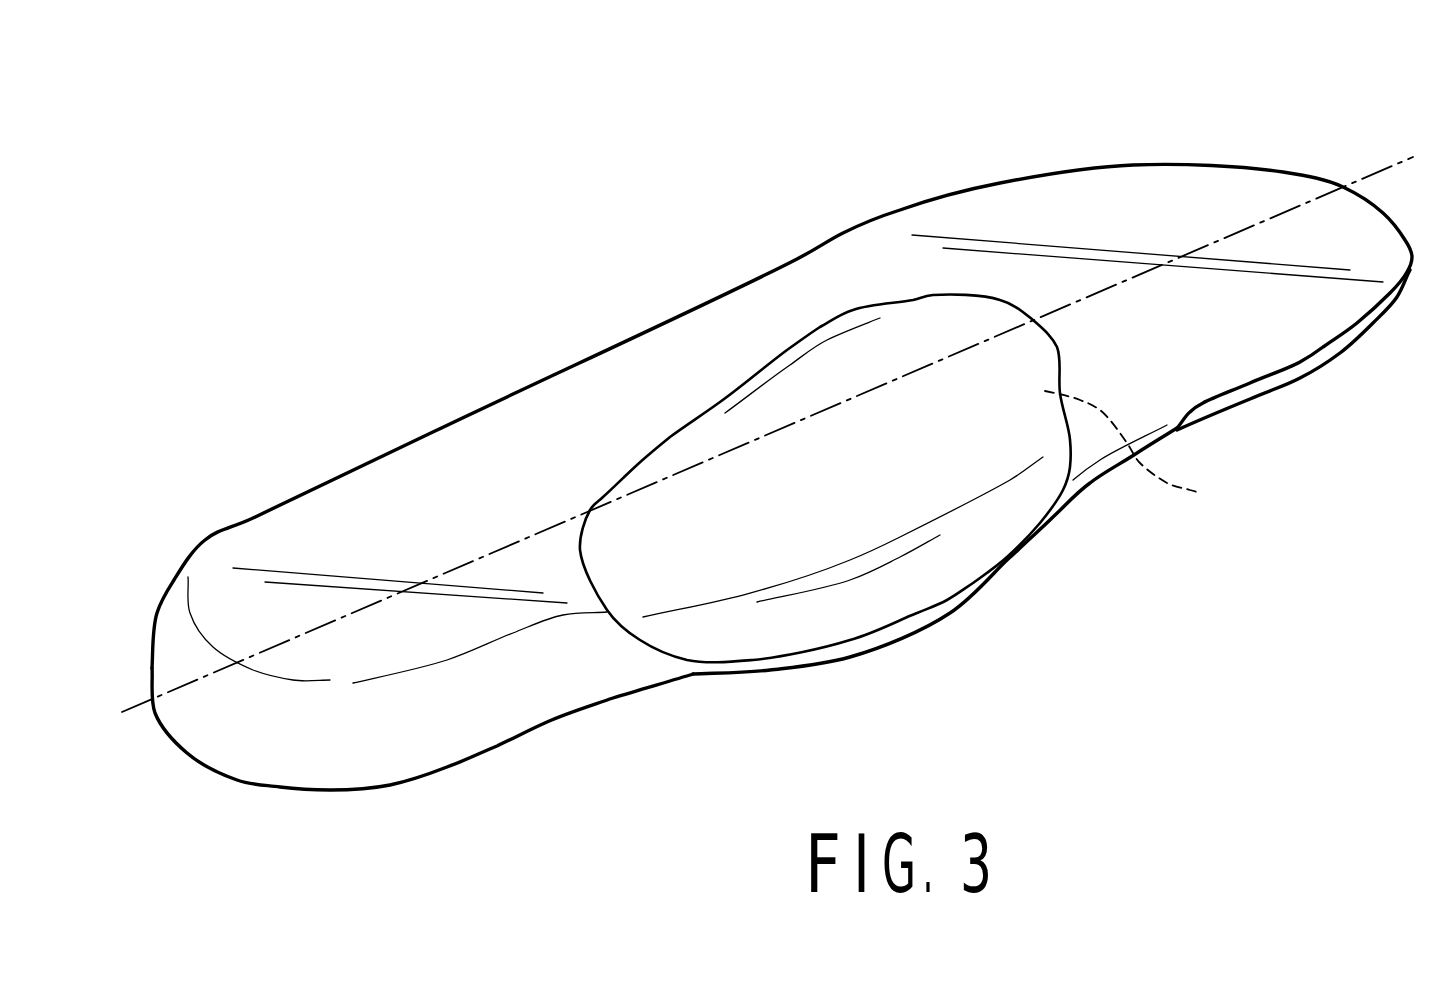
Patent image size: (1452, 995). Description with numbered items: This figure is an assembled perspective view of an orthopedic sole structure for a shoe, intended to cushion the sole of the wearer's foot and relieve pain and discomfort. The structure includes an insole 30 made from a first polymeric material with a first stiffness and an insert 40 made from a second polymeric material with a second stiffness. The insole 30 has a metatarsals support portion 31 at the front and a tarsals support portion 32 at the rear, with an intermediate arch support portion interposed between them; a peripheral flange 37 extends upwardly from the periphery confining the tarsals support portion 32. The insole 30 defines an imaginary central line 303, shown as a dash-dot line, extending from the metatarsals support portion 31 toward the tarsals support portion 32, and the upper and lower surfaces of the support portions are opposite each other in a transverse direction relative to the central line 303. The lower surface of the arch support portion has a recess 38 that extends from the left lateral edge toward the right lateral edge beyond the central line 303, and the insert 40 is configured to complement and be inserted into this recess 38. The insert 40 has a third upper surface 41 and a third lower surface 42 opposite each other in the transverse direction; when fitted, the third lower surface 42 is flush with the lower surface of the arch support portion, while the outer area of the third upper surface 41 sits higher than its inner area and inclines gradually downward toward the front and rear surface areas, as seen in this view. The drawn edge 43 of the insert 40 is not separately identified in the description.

The insole 30 is at (431, 384).
The metatarsals support portion 31 is at (1135, 177).
The tarsals support portion 32 is at (255, 543).
The peripheral flange 37 is at (353, 762).
The recess 38 is at (640, 643).
The insert 40 is at (878, 266).
The third upper surface 41 is at (1147, 455).
The third lower surface 42 is at (797, 357).
The side face of pad 43 is at (960, 572).
The imaginary central line 303 is at (1362, 180).